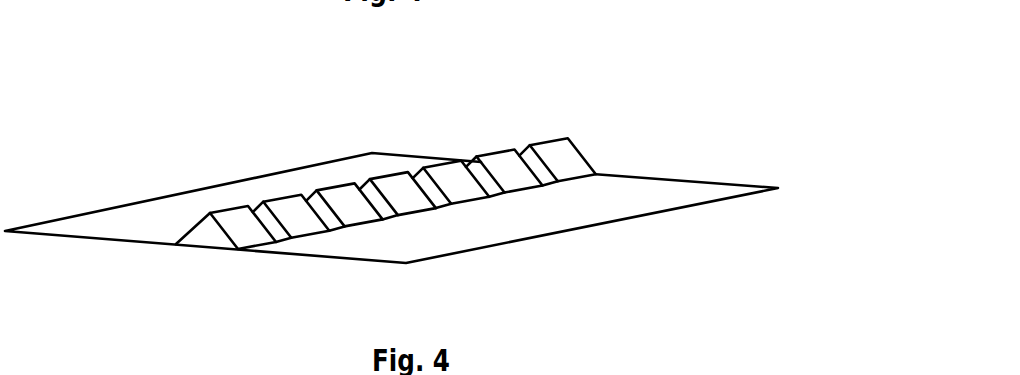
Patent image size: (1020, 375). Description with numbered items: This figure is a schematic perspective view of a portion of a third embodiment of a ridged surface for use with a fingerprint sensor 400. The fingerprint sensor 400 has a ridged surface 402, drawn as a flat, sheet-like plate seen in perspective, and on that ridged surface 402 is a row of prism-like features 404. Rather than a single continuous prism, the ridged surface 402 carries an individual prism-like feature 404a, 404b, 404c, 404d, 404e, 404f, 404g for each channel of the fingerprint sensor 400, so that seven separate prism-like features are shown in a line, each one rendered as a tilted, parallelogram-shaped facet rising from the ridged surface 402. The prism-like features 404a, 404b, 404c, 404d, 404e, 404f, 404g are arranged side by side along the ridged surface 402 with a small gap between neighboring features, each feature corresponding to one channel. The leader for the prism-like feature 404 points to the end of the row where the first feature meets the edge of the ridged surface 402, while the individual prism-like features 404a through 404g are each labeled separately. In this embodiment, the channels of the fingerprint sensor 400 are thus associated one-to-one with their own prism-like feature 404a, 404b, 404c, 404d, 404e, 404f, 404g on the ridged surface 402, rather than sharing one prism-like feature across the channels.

The fingerprint sensor 400 is at (704, 72).
The ridged surface 402 is at (630, 219).
The prism-like feature 404 is at (200, 234).
The prism-like feature 404a is at (232, 209).
The prism-like feature 404b is at (285, 196).
The prism-like feature 404c is at (344, 184).
The prism-like feature 404d is at (397, 174).
The prism-like feature 404e is at (443, 164).
The prism-like feature 404f is at (497, 153).
The prism-like feature 404g is at (553, 141).